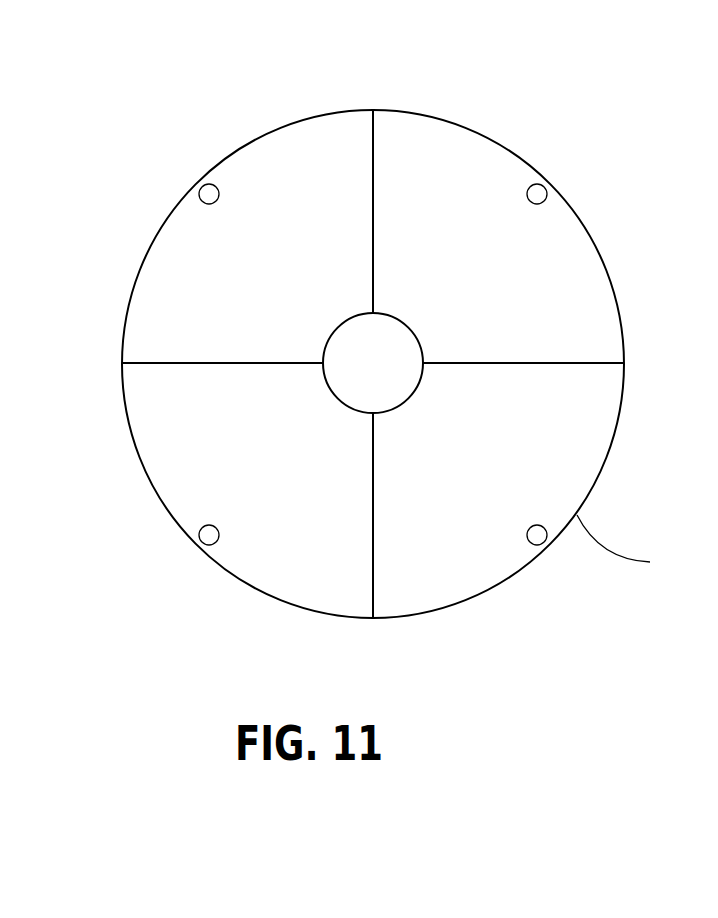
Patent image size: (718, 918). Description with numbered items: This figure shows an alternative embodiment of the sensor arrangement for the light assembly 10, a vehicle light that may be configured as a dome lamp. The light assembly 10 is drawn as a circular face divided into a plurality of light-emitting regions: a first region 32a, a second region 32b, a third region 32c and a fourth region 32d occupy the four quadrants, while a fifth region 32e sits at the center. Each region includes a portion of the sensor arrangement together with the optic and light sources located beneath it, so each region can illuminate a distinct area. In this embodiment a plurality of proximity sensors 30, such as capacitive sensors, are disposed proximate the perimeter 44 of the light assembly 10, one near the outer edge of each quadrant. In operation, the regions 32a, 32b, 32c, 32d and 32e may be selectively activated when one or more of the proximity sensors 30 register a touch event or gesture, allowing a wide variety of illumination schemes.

The light assembly 10 is at (233, 133).
The proximity sensors 30 is at (200, 187).
The first region 32a is at (288, 241).
The second region 32b is at (460, 253).
The third region 32c is at (471, 500).
The fourth region 32d is at (296, 508).
The fifth region 32e is at (378, 388).
The perimeter 44 is at (630, 546).